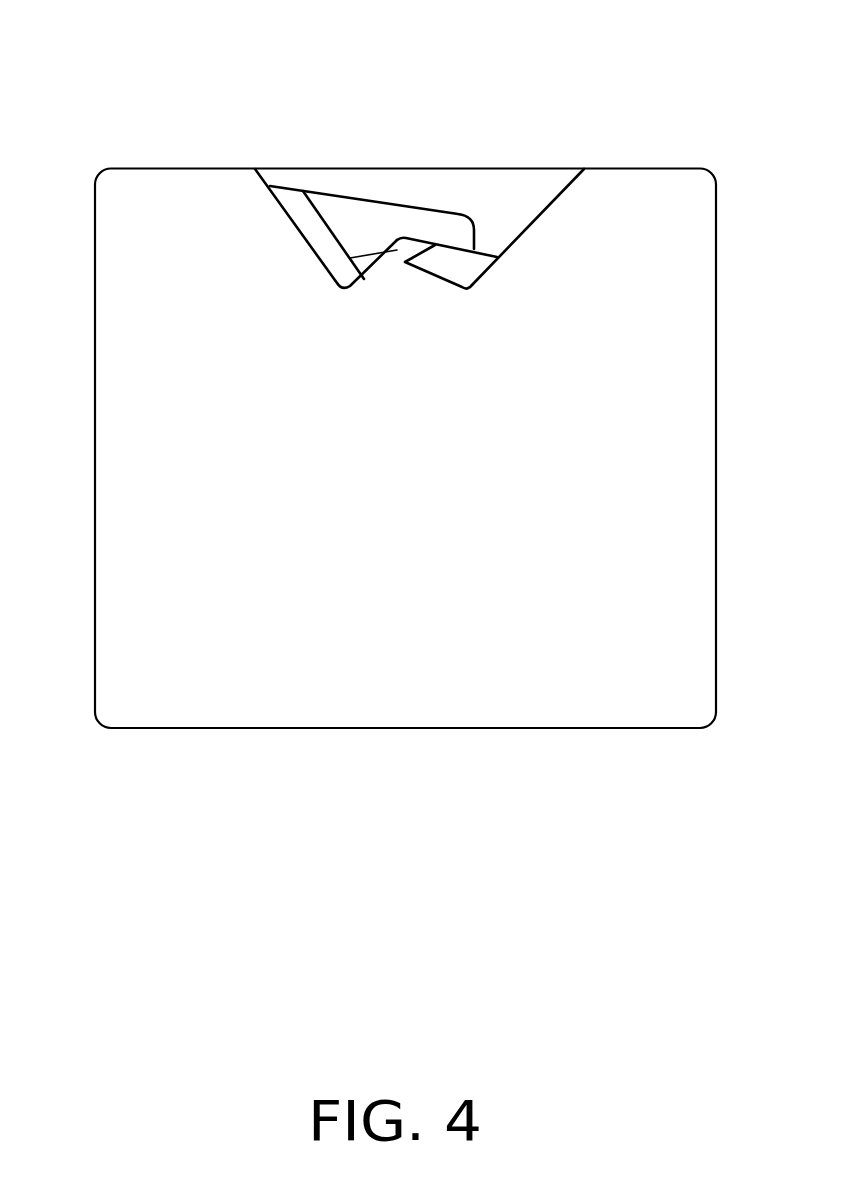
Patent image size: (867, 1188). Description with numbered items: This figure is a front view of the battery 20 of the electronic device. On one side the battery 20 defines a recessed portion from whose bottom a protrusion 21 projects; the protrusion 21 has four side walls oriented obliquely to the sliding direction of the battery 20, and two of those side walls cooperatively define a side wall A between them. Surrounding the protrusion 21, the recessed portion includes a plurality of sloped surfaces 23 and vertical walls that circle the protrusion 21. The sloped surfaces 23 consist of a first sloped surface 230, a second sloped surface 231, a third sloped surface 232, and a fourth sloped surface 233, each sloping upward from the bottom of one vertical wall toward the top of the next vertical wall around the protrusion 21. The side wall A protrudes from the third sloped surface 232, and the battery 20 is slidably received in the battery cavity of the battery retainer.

The battery 20 is at (414, 380).
The protrusion 21 is at (353, 227).
The sloped surfaces 23 is at (419, 152).
The first sloped surface 230 is at (528, 184).
The second sloped surface 231 is at (458, 267).
The third sloped surface 232 is at (400, 247).
The fourth sloped surface 233 is at (307, 222).
The side wall A is at (367, 280).